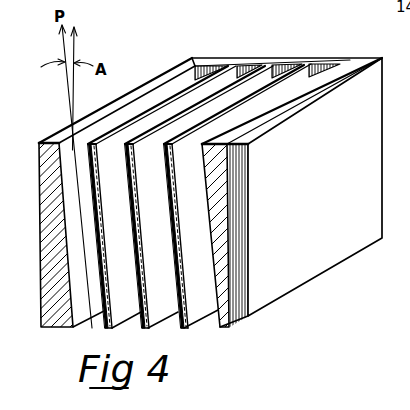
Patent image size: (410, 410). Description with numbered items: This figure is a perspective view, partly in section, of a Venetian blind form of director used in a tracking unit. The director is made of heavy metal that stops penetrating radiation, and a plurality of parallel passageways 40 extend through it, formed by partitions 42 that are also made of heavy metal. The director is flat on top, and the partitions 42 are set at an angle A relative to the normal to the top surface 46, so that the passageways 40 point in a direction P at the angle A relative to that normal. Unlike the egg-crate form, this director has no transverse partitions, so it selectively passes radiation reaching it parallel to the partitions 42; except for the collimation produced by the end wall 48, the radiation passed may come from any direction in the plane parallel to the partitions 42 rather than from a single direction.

The passageways 40 is at (250, 68).
The partitions 42 is at (302, 68).
The top surface 46 is at (172, 72).
The end wall 48 is at (327, 62).